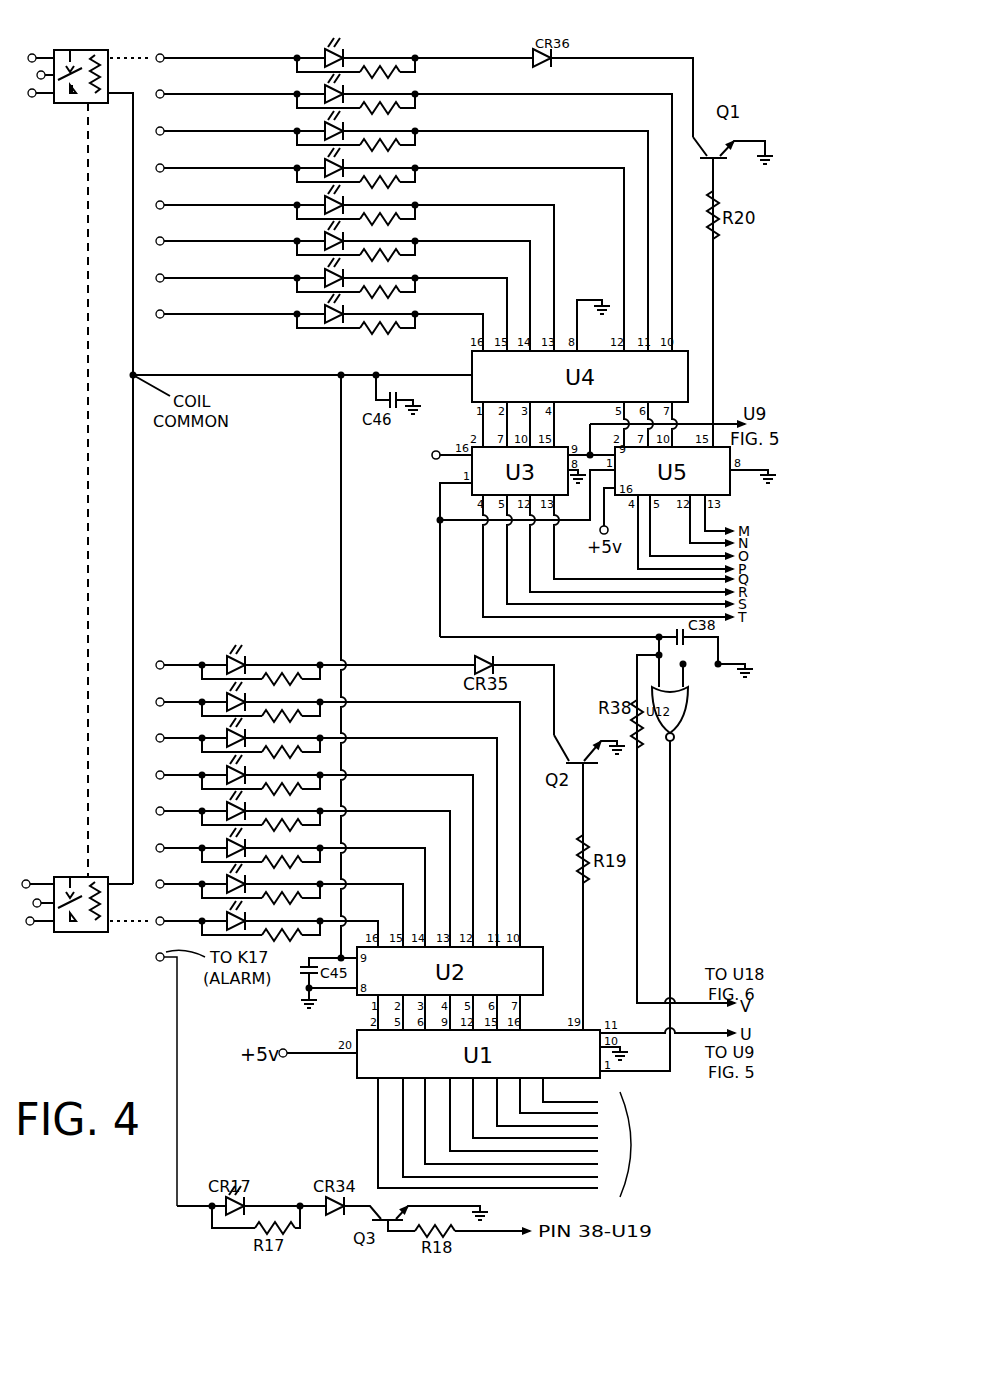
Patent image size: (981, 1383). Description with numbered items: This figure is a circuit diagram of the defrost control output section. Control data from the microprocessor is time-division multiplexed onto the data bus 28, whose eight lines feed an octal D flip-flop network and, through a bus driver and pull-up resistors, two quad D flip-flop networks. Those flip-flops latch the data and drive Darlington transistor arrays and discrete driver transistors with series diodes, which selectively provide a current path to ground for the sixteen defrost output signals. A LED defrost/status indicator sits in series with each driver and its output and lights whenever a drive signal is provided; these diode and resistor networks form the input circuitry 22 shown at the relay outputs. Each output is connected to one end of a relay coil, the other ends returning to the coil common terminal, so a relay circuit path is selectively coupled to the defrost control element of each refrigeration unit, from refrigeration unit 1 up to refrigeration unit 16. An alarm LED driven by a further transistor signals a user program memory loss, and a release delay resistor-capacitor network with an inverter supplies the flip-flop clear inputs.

The diode and resistor input network 22 is at (288, 336).
The data bus 28 is at (551, 1137).
The refrigeration unit 16 is at (36, 48).
The refrigeration unit 1 is at (31, 940).